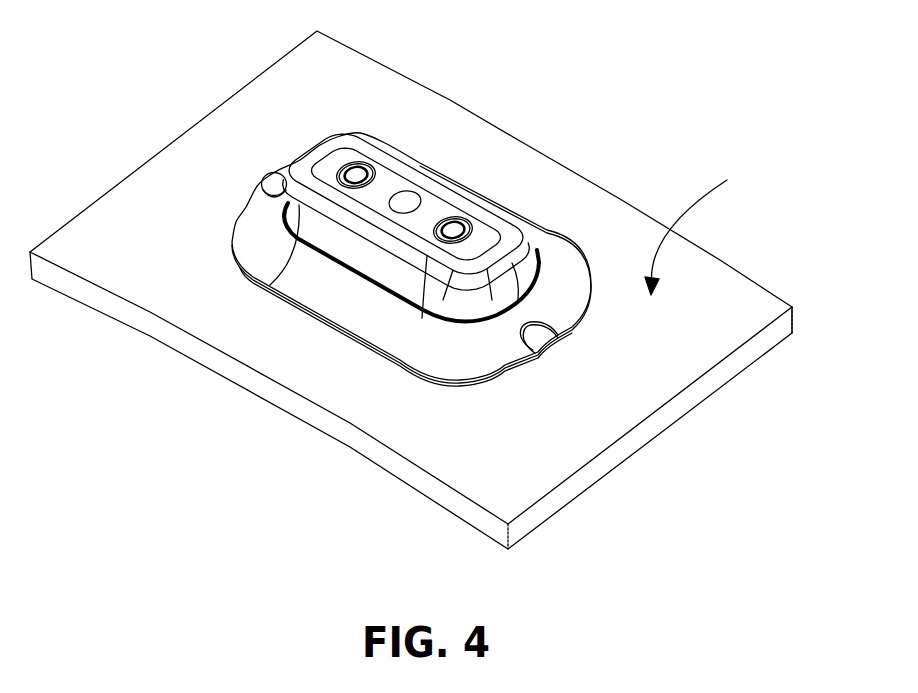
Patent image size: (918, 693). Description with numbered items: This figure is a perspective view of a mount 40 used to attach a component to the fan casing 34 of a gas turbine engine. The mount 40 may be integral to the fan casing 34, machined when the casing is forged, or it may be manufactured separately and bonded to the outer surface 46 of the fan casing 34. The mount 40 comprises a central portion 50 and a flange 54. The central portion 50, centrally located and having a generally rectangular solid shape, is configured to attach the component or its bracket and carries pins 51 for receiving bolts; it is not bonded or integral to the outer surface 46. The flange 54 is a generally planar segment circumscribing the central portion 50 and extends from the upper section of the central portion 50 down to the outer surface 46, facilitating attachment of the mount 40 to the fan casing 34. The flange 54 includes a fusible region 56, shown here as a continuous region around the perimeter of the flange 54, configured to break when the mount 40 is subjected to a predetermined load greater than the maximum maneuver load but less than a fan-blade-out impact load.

The fan casing 34 is at (648, 427).
The mount 40 is at (323, 290).
The outer surface 46 is at (697, 225).
The central portion 50 is at (387, 170).
The pins 51 is at (353, 162).
The flange 54 is at (267, 230).
The fusible region 56 is at (467, 327).